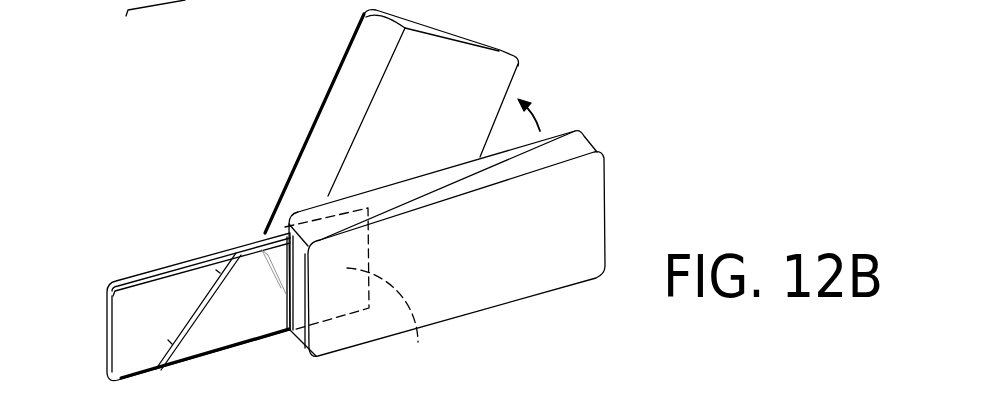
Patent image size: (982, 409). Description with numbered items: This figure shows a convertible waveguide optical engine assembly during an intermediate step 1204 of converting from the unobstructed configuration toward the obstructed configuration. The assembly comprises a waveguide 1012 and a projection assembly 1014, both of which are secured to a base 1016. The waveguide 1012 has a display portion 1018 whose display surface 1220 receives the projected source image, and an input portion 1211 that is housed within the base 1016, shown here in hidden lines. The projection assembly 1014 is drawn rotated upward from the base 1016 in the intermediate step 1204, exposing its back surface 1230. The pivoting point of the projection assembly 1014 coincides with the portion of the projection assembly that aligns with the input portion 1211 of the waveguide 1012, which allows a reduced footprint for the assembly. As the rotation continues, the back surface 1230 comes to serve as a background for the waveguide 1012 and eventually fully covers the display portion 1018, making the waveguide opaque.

The waveguide 1012 is at (138, 305).
The projection assembly 1014 is at (334, 108).
The base 1016 is at (588, 187).
The display portion 1018 is at (207, 0).
The intermediate step 1204 is at (537, 115).
The input portion 1211 is at (364, 289).
The display surface 1220 is at (268, 321).
The back surface 1230 is at (455, 122).